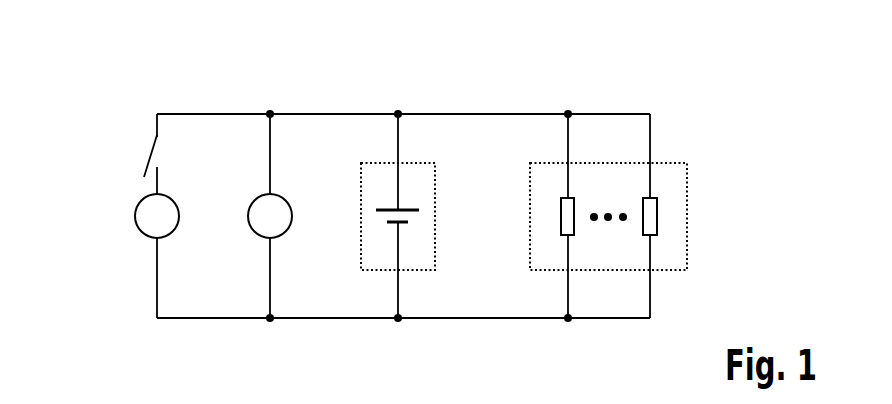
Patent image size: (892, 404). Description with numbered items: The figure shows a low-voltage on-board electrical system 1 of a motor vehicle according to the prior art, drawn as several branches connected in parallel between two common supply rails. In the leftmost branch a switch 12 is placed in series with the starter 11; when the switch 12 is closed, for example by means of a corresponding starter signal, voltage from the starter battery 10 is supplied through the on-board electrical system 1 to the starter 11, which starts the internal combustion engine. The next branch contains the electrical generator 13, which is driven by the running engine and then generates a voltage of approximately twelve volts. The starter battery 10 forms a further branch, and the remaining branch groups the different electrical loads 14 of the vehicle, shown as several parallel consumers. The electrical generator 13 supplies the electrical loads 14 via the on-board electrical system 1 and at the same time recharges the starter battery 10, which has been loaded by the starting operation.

The on-board electrical system 1 is at (686, 59).
The starter battery 10 is at (358, 183).
The starter 11 is at (139, 228).
The switch 12 is at (148, 153).
The electrical generator 13 is at (252, 228).
The electrical loads 14 is at (528, 183).